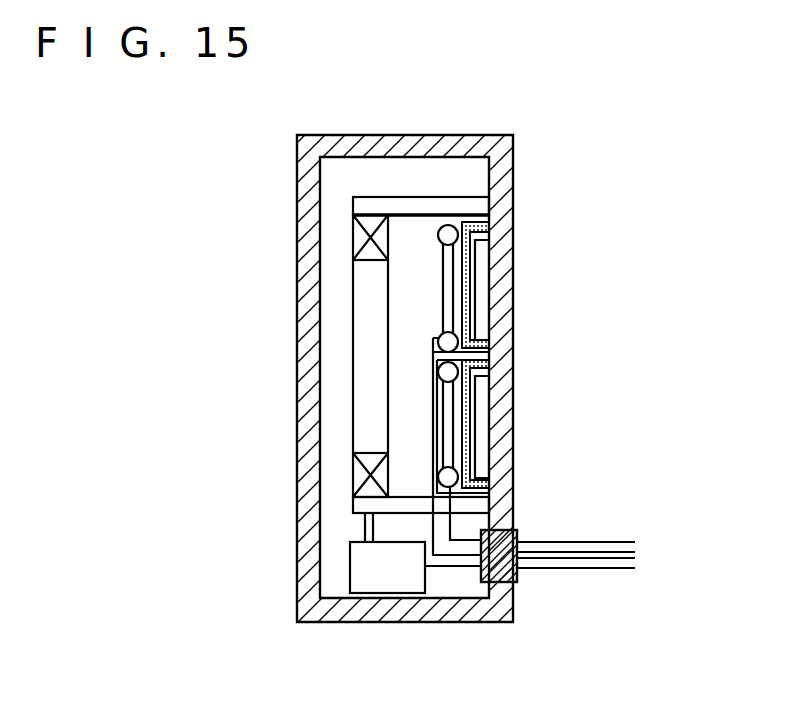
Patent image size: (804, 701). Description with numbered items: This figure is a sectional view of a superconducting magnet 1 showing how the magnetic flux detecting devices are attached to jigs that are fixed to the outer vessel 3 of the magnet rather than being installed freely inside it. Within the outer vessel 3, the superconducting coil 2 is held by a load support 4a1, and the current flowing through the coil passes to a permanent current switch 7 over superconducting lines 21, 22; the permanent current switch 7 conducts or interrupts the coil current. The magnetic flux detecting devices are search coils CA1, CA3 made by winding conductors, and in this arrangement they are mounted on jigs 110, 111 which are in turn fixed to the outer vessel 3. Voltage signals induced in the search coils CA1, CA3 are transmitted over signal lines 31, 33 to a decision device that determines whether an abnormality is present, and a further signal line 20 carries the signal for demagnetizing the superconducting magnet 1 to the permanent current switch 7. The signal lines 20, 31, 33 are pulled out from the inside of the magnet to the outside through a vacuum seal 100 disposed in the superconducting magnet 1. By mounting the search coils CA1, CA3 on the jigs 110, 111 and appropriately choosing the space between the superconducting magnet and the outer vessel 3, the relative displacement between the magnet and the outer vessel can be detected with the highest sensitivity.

The superconducting magnet 1 is at (402, 121).
The superconducting coil 2 is at (355, 240).
The outer vessel 3 is at (472, 622).
The load support 4a1 is at (472, 200).
The permanent current switch 7 is at (350, 580).
The signal line 20 is at (628, 568).
The superconducting line 21 is at (367, 528).
The superconducting line 22 is at (375, 527).
The signal line 31 is at (585, 542).
The signal line 33 is at (630, 548).
The vacuum seal 100 is at (510, 583).
The jig 110 is at (462, 318).
The jig 111 is at (462, 392).
The search coil CA1 is at (462, 272).
The search coil CA3 is at (462, 434).